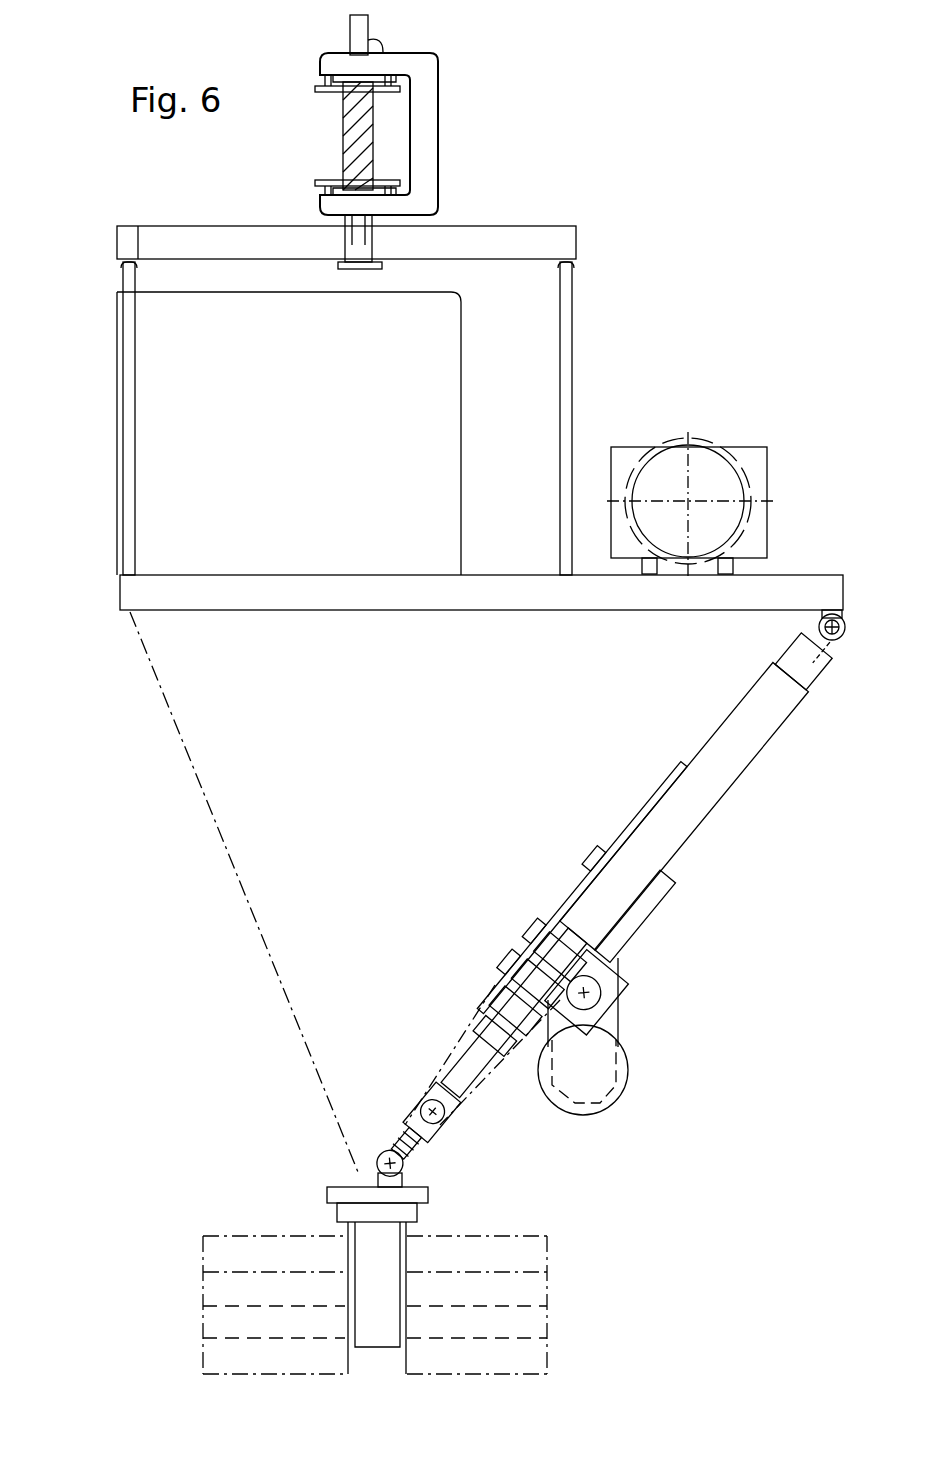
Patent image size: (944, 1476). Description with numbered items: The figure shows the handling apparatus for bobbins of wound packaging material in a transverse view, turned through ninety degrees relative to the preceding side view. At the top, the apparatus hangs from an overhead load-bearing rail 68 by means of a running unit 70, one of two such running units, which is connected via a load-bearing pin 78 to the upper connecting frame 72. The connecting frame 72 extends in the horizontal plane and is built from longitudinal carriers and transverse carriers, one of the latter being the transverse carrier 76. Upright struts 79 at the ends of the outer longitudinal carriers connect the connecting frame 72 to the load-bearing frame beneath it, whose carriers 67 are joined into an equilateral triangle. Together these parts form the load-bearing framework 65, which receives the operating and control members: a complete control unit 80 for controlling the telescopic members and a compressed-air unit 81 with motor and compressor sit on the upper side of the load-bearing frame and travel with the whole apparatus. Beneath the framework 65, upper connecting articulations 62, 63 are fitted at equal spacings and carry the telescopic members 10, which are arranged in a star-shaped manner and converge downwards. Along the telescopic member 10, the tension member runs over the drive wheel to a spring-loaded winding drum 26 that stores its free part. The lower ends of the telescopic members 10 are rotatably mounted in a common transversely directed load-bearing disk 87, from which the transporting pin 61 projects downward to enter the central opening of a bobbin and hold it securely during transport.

The telescopic member 10 is at (245, 905).
The winding drum 26 is at (622, 1098).
The transporting pin 61 is at (375, 1287).
The upper connecting articulation 62 is at (820, 621).
The upper connecting articulation 63 is at (832, 627).
The load-bearing framework 65 is at (604, 302).
The carrier 67 is at (398, 622).
The load-bearing rail 68 is at (350, 146).
The running unit 70 is at (458, 78).
The upper connecting frame 72 is at (592, 230).
The transverse carrier 76 is at (496, 240).
The load-bearing pin 78 is at (358, 270).
The upright strut 79 is at (566, 344).
The control unit 80 is at (430, 402).
The compressed-air unit 81 is at (705, 425).
The load-bearing disk 87 is at (345, 1192).